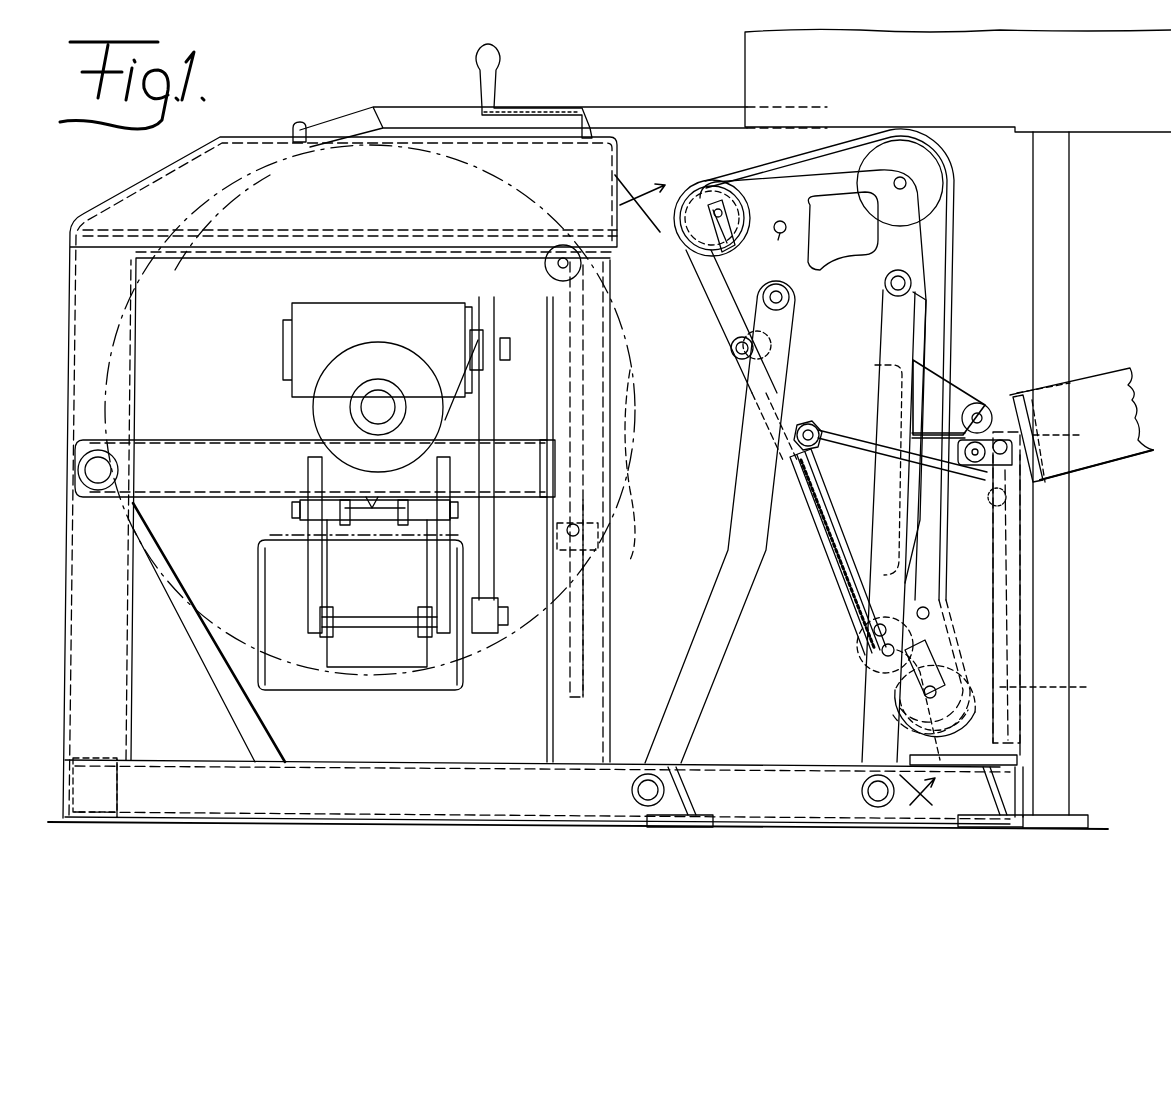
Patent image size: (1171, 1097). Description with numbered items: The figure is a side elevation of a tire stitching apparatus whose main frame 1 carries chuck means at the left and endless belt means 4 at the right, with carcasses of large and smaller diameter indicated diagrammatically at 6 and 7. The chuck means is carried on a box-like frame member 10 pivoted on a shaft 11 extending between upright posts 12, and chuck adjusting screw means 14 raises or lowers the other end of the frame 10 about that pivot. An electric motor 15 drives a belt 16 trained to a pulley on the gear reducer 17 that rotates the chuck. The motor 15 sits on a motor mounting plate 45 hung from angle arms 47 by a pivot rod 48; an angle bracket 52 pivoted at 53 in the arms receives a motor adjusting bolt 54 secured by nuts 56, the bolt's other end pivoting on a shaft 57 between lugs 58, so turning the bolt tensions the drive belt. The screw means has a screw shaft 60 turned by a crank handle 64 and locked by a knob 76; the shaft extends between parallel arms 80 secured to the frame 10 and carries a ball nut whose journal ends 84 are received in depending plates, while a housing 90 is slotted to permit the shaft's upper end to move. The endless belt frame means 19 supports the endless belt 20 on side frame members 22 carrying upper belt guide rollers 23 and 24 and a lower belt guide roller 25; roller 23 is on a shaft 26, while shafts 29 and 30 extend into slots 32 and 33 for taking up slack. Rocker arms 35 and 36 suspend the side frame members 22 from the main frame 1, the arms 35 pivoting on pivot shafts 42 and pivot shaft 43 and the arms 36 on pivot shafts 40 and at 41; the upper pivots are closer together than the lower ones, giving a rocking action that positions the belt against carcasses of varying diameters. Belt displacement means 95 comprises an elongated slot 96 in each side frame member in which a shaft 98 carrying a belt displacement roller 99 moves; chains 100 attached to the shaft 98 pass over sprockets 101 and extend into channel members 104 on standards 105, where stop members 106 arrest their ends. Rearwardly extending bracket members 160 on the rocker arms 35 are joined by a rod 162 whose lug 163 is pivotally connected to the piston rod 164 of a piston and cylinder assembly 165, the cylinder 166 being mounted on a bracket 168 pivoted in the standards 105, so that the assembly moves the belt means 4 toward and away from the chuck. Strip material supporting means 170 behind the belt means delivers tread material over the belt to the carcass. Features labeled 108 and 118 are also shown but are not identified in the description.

The main frame 1 is at (525, 842).
The endless belt means 4 is at (996, 257).
The large diameter casing 6 is at (650, 485).
The smaller diameter casing 7 is at (195, 395).
The box-like frame member 10 is at (218, 482).
The pivot shaft 11 is at (78, 470).
The upright posts 12 is at (70, 400).
The chuck adjusting screw means 14 is at (598, 417).
The electric motor 15 is at (305, 685).
The belt 16 is at (488, 430).
The gear reducer 17 is at (400, 318).
The endless belt frame means 19 is at (935, 236).
The endless belt 20 is at (845, 150).
The side frame members 22 is at (920, 345).
The upper belt guide roller 23 is at (920, 168).
The upper belt guide roller 24 is at (690, 225).
The lower belt guide roller 25 is at (905, 703).
The shaft 26 is at (908, 185).
The shaft 29 is at (738, 215).
The shaft 30 is at (905, 685).
The slot 32 is at (712, 262).
The slot 33 is at (925, 652).
The rocker arm 35 is at (905, 312).
The rocker arm 36 is at (725, 563).
The pivot shaft 40 is at (775, 284).
The pivot 41 is at (665, 792).
The pivot shaft 42 is at (885, 284).
The pivot shaft 43 is at (862, 793).
The motor mounting plate 45 is at (330, 565).
The angle arms 47 is at (440, 572).
The pivot rod 48 is at (380, 627).
The angle bracket 52 is at (409, 548).
The pivot mounting 53 is at (300, 515).
The motor adjusting bolt 54 is at (373, 497).
The nuts 56 is at (349, 496).
The shaft 57 is at (381, 496).
The lugs 58 is at (372, 548).
The screw shaft 60 is at (585, 620).
The crank handle 64 is at (530, 110).
The knob 76 is at (553, 278).
The parallel arms 80 is at (515, 490).
The journal ends 84 is at (600, 528).
The housing 90 is at (612, 158).
The belt displacement means 95 is at (850, 630).
The elongated slot 96 is at (840, 575).
The shaft 98 is at (860, 650).
The belt displacement roller 99 is at (903, 580).
The chain 100 is at (822, 430).
The sprockets 101 is at (830, 450).
The channel members 104 is at (1066, 682).
The standards 105 is at (1000, 588).
The stop member 106 is at (1020, 532).
The pin 108 is at (731, 348).
The pin 118 is at (781, 237).
The bracket members 160 is at (955, 397).
The rod 162 is at (973, 390).
The lug 163 is at (940, 470).
The piston rod 164 is at (1070, 438).
The piston and cylinder assembly 165 is at (1098, 390).
The cylinder 166 is at (1148, 462).
The bracket 168 is at (1033, 477).
The strip material supporting means 170 is at (1100, 135).